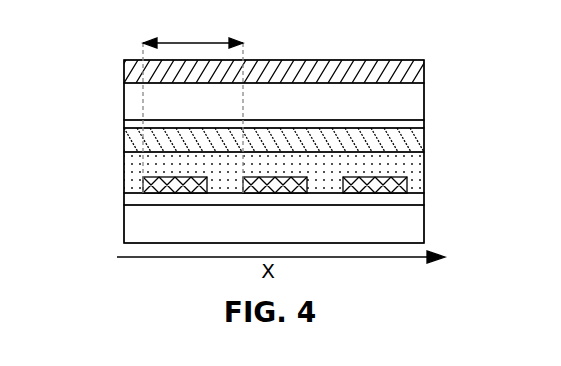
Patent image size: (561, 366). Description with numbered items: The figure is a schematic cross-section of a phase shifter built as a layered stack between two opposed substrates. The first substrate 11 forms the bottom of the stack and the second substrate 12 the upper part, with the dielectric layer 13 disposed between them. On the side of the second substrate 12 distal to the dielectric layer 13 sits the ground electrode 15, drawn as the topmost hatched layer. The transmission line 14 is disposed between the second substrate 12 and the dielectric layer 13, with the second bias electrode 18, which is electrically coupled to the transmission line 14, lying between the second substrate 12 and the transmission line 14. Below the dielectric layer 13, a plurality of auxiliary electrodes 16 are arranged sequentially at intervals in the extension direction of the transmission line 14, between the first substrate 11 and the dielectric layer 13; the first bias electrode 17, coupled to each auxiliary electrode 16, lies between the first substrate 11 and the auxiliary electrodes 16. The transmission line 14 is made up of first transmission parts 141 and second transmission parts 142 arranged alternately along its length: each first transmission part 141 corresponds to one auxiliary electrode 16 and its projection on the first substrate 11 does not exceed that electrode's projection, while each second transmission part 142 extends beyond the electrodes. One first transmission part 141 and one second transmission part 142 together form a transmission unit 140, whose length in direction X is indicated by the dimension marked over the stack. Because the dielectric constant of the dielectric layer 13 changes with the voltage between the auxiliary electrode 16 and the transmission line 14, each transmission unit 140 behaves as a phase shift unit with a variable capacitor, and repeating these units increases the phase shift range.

The first substrate 11 is at (424, 220).
The second substrate 12 is at (424, 100).
The dielectric layer 13 is at (424, 178).
The transmission line 14 is at (424, 144).
The first transmission part 141 is at (150, 138).
The second transmission part 142 is at (217, 142).
The transmission unit 140 is at (193, 107).
The ground electrode 15 is at (300, 60).
The auxiliary electrode 16 is at (147, 185).
The first bias electrode 17 is at (124, 197).
The second bias electrode 18 is at (424, 128).